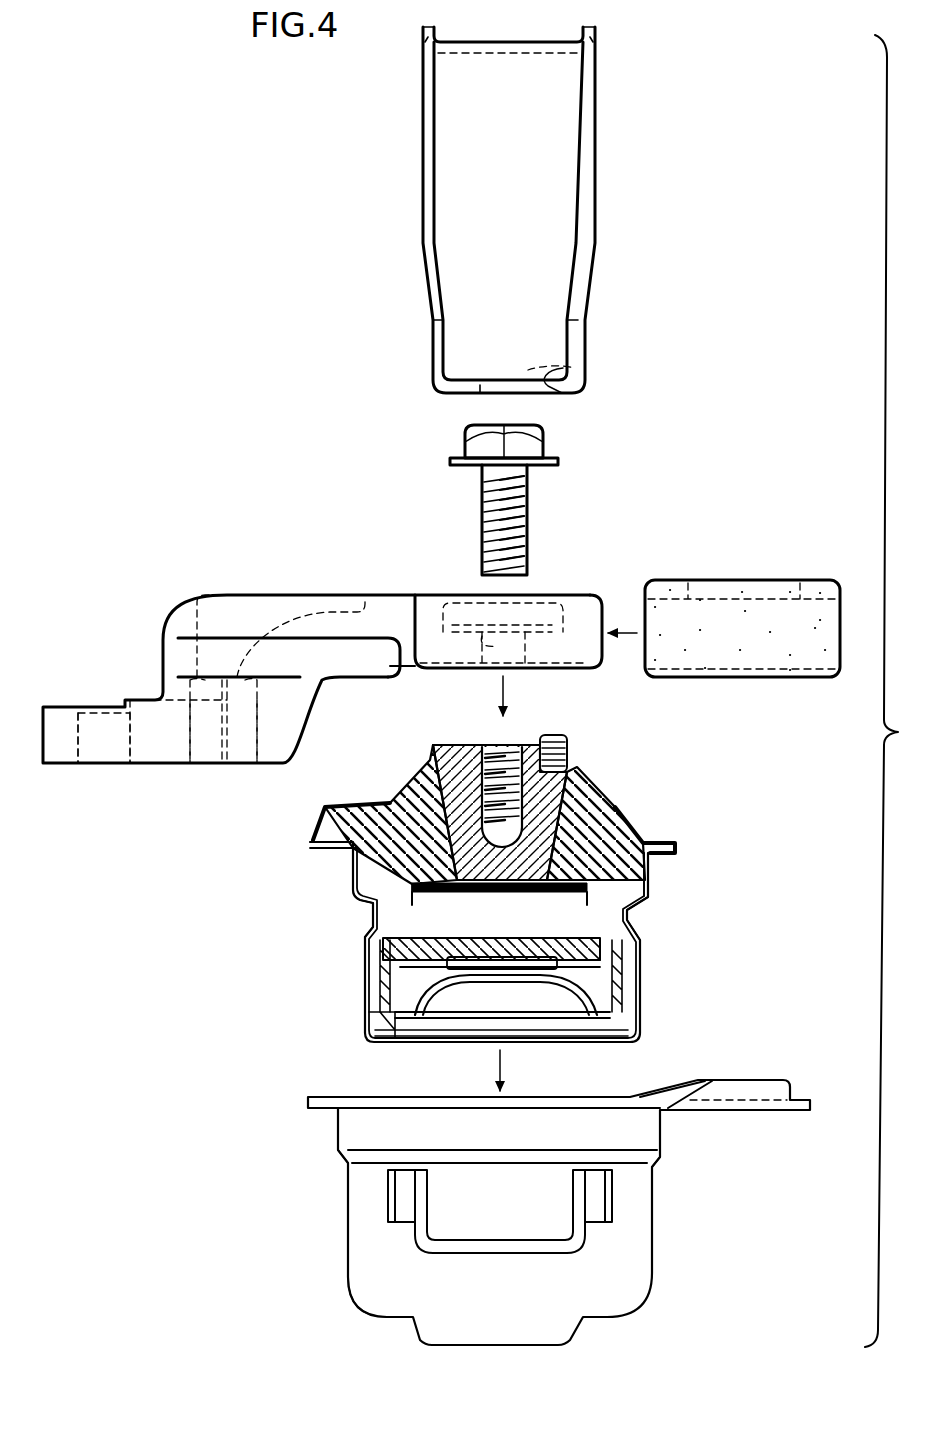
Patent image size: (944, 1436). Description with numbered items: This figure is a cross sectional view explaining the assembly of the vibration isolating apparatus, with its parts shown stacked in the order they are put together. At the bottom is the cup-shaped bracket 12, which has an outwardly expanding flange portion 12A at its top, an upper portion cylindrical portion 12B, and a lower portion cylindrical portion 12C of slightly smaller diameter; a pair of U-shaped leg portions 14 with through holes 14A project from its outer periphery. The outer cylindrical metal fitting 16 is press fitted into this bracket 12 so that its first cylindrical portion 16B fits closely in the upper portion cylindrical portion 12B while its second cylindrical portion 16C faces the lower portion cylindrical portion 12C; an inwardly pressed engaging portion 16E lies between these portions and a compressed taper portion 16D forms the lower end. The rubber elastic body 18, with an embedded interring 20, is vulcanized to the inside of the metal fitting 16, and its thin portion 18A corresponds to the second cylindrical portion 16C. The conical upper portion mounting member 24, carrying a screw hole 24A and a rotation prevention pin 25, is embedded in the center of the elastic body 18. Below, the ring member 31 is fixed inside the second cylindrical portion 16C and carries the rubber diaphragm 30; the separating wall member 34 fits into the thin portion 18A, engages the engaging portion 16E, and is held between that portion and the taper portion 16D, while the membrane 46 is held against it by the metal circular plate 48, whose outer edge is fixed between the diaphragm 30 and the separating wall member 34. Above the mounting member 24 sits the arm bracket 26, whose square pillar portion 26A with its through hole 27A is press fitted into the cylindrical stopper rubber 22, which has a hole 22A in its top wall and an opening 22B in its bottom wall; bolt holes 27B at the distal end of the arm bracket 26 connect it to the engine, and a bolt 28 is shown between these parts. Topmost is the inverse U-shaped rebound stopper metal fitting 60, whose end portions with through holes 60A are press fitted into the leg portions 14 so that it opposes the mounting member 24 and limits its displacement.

The rebound stopper metal fitting 60 is at (595, 147).
The through hole 60A is at (563, 366).
The bolt 28 is at (527, 498).
The arm bracket 26 is at (307, 594).
The square pillar portion 26A is at (593, 598).
The through hole 27A is at (497, 630).
The bolt holes 27B is at (130, 737).
The stopper rubber 22 is at (817, 582).
The hole 22A is at (688, 598).
The opening 22B is at (670, 672).
The upper portion mounting member 24 is at (550, 798).
The screw hole 24A is at (495, 745).
The rotation prevention pin 25 is at (567, 739).
The interring 20 is at (610, 807).
The rubber elastic body 18 is at (627, 832).
The outer cylindrical metal fitting 16 is at (657, 903).
The first cylindrical portion 16B is at (650, 875).
The second cylindrical portion 16C is at (640, 950).
The taper portion 16D is at (638, 1035).
The engaging portion 16E is at (370, 918).
The membrane 46 is at (530, 948).
The thin portion 18A is at (373, 987).
The separating wall member 34 is at (632, 967).
The metal circular plate 48 is at (433, 978).
The rubber diaphragm 30 is at (495, 983).
The ring member 31 is at (367, 1017).
The bracket 12 is at (652, 1245).
The flange portion 12A is at (610, 1103).
The upper portion cylindrical portion 12B is at (343, 1132).
The lower portion cylindrical portion 12C is at (350, 1243).
The leg portions 14 is at (580, 1200).
The through holes 14A is at (523, 1247).